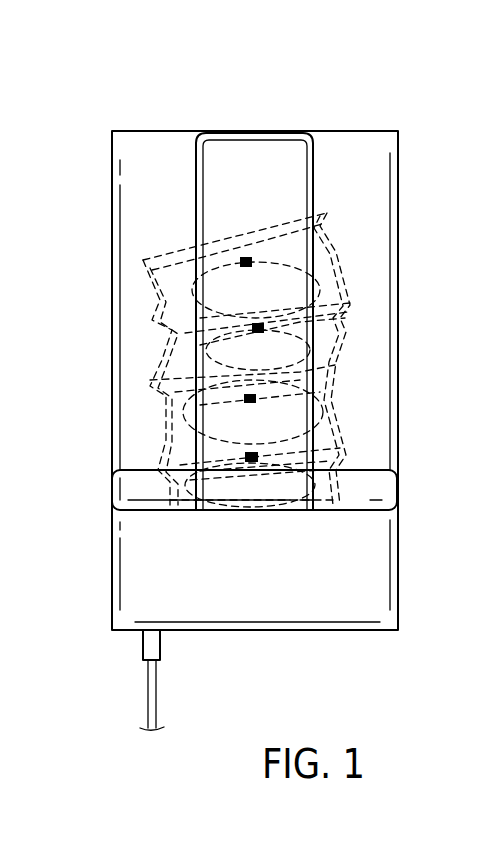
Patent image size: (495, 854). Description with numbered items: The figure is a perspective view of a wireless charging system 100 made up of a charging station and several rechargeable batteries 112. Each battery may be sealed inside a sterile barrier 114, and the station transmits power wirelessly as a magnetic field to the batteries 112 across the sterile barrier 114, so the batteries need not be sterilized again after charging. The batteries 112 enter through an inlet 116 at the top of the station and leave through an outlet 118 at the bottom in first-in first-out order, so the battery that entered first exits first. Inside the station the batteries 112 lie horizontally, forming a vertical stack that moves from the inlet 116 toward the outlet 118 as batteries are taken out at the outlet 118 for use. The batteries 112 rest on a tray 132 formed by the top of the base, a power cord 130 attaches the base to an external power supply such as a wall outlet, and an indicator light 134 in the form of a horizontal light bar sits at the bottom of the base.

The wireless charging system 100 is at (260, 50).
The rechargeable batteries 112 is at (178, 326).
The sterile barrier 114 is at (330, 224).
The inlet 116 is at (155, 150).
The outlet 118 is at (370, 487).
The power cord 130 is at (152, 685).
The tray 132 is at (320, 510).
The indicator light 134 is at (245, 631).